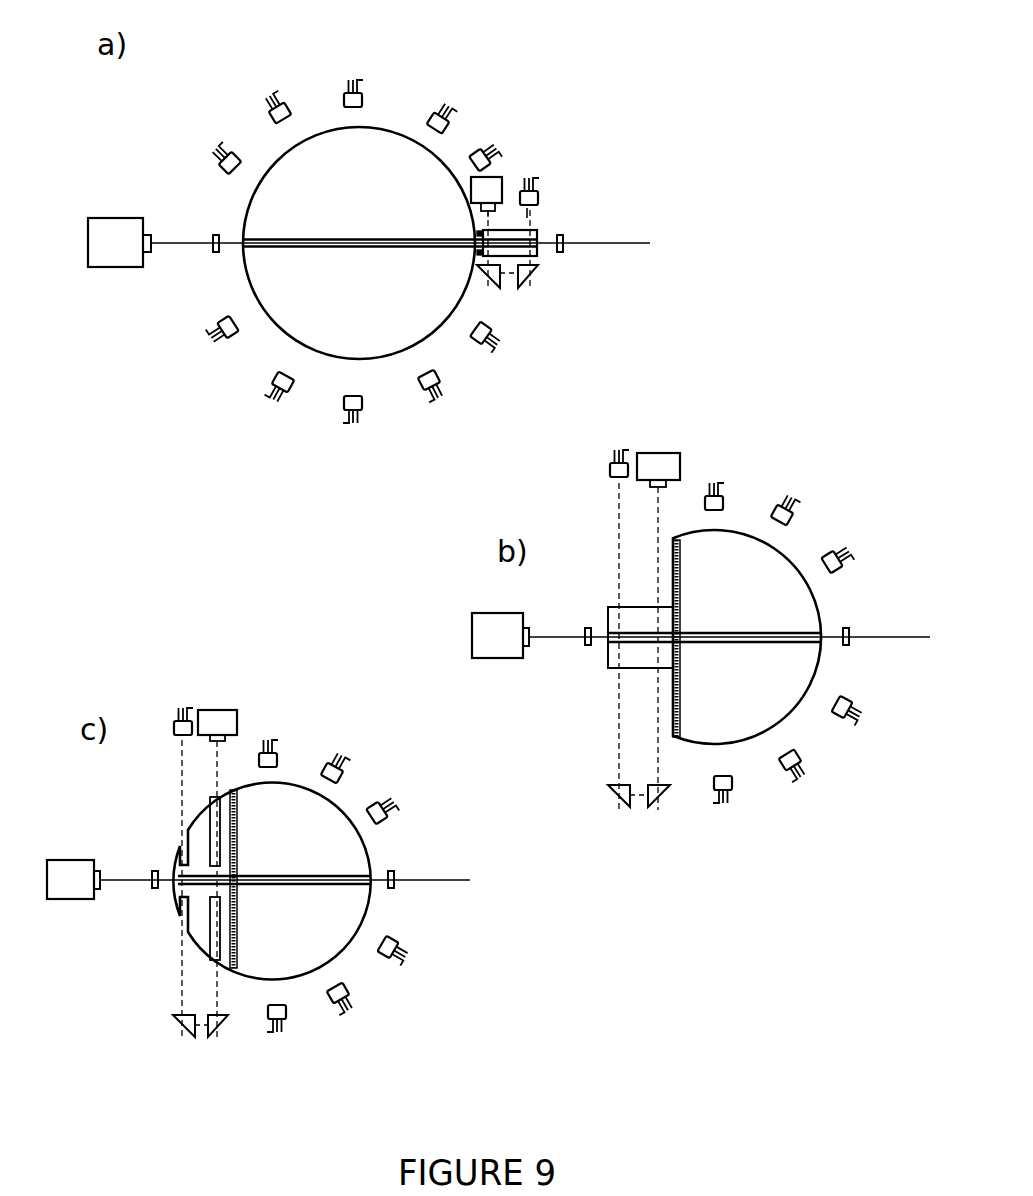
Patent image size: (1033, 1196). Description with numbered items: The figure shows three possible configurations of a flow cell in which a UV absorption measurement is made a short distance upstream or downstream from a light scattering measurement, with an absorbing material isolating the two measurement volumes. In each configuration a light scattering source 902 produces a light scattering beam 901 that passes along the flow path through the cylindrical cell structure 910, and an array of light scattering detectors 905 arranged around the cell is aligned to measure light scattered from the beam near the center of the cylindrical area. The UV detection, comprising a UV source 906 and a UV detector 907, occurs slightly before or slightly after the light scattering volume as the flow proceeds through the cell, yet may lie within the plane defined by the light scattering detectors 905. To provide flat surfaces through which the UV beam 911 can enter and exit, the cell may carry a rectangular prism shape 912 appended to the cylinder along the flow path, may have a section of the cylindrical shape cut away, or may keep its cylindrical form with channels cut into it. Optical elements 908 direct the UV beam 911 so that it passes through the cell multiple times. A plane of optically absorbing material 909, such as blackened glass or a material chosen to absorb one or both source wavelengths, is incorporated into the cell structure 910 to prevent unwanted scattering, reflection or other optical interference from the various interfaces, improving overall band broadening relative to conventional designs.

The light scattering beam 901 is at (185, 248).
The light scattering source 902 is at (105, 210).
The light scattering detectors 905 is at (330, 87).
The UV source 906 is at (507, 165).
The UV detector 907 is at (547, 192).
The optical elements 908 is at (528, 288).
The optically absorbing material 909 is at (422, 220).
The cell structure 910 is at (263, 220).
The UV beam 911 is at (528, 213).
The rectangular prism shape 912 is at (542, 257).